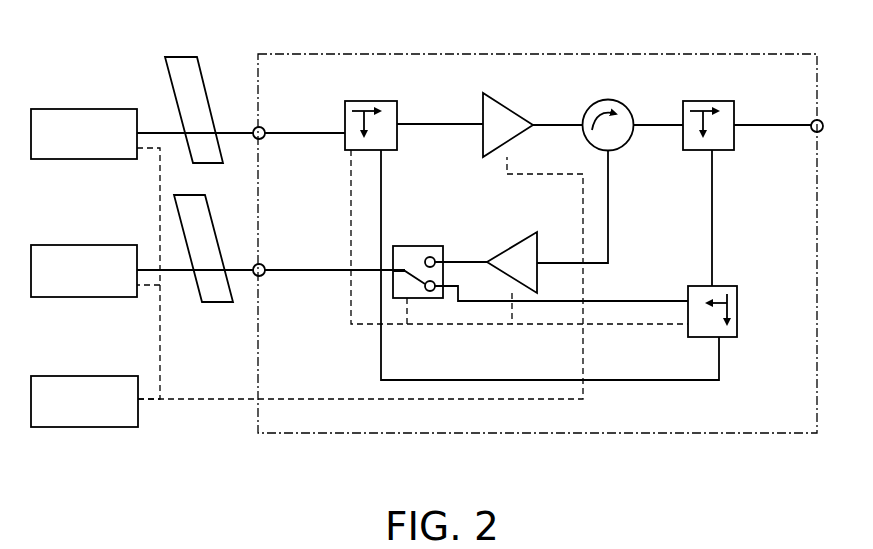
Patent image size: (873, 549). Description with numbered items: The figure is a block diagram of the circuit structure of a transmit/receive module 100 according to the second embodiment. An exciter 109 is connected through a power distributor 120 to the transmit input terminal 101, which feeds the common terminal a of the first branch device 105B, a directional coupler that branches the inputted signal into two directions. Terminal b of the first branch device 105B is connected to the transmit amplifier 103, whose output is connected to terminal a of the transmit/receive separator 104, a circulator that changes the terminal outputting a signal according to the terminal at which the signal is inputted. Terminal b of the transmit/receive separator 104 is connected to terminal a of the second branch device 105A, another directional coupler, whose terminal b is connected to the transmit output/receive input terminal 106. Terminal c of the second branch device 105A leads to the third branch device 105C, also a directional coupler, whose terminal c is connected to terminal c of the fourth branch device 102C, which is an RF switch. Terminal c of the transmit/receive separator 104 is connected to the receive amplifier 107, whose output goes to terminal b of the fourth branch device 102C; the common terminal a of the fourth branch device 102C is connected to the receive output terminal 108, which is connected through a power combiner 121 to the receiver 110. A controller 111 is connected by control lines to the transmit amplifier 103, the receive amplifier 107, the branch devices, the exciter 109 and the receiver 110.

The transmit/receive module 100 is at (431, 40).
The transmit input terminal 101 is at (263, 127).
The fourth branch device 102C is at (421, 245).
The transmit amplifier 103 is at (507, 107).
The transmit/receive separator 104 is at (626, 107).
The second branch device 105A is at (707, 101).
The first branch device 105B is at (369, 101).
The third branch device 105C is at (691, 286).
The transmit output/receive input terminal 106 is at (822, 120).
The receive amplifier 107 is at (521, 238).
The receive output terminal 108 is at (263, 264).
The exciter 109 is at (80, 109).
The receiver 110 is at (82, 245).
The controller 111 is at (82, 376).
The power distributor 120 is at (186, 57).
The power combiner 121 is at (213, 303).